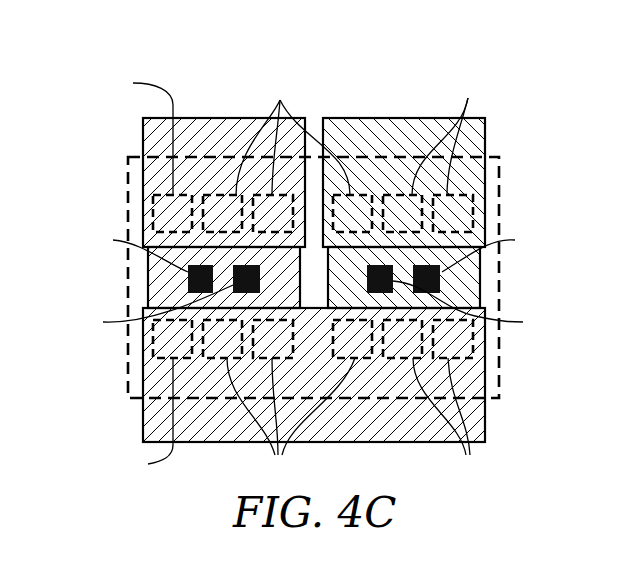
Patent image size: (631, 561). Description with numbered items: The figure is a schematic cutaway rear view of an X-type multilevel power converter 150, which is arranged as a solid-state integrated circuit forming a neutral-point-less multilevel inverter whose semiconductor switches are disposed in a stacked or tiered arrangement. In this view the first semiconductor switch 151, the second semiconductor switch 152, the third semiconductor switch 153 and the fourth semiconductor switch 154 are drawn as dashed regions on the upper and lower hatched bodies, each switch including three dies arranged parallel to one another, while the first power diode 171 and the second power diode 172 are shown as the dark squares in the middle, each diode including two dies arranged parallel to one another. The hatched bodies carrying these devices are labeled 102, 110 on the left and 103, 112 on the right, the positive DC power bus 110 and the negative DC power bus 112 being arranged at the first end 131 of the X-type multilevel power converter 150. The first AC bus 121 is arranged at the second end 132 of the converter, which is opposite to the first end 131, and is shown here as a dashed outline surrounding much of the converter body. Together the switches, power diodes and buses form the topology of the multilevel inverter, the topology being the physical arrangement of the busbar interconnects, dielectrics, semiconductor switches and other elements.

The X-type multilevel power converter 150 is at (311, 251).
The first substrate 102 is at (224, 148).
The positive DC power bus 110 is at (223, 118).
The second substrate 103 is at (404, 148).
The negative DC power bus 112 is at (405, 118).
The first end 131 is at (454, 148).
The second end 132 is at (494, 432).
The first AC bus 121 is at (494, 413).
The first semiconductor switch S1 151 is at (146, 212).
The second semiconductor switch S2 152 is at (146, 336).
The third semiconductor switch S3 153 is at (484, 337).
The fourth semiconductor switch S4 154 is at (484, 214).
The first power diode 171 is at (180, 281).
The second power diode 172 is at (452, 280).